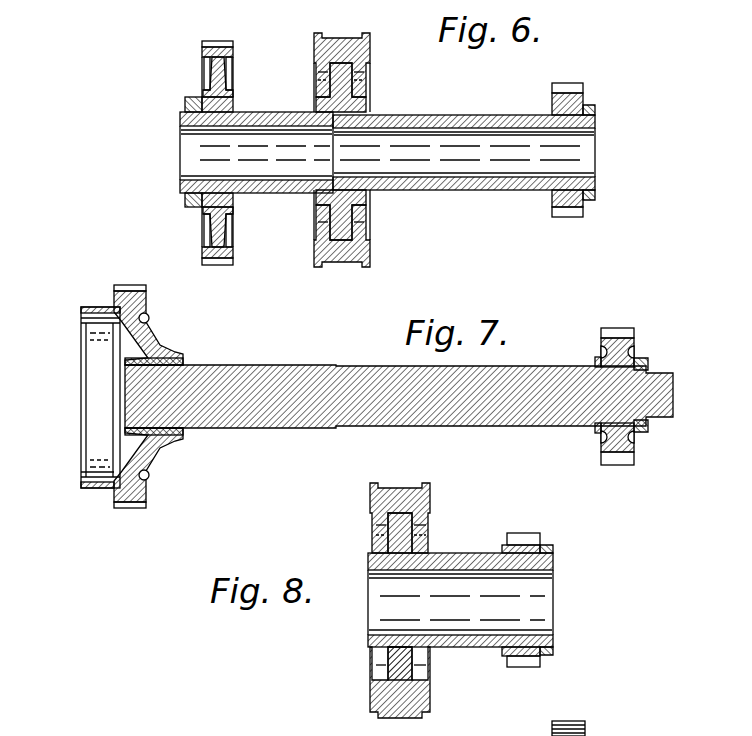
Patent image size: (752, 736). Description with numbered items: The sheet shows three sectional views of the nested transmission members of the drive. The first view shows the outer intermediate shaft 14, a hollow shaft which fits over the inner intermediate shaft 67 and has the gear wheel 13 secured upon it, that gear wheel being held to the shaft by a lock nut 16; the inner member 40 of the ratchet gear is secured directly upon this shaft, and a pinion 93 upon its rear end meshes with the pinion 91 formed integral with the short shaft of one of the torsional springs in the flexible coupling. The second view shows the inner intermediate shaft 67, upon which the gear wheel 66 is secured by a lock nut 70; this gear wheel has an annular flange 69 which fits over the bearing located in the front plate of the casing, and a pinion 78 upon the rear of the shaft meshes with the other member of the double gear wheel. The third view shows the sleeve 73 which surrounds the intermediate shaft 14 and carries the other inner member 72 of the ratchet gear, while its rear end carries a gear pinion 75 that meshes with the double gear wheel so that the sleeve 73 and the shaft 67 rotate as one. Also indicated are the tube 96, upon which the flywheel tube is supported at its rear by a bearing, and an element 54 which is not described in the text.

In FIG. 6, the gear wheel 13 is at (203, 69).
In FIG. 6, the outer intermediate shaft 14 is at (195, 157).
In FIG. 6, the lock nut 16 is at (191, 206).
In FIG. 6, the inner member 40 is at (343, 268).
In FIG. 6, the pinion 93 is at (567, 218).
In FIG. 7, the gear wheel 66 is at (129, 286).
In FIG. 7, the inner intermediate shaft 67 is at (257, 376).
In FIG. 7, the annular flange 69 is at (87, 307).
In FIG. 7, the lock nut 70 is at (126, 431).
In FIG. 7, the pinion 78 is at (617, 328).
In FIG. 8, the inner member 72 is at (398, 484).
In FIG. 8, the sleeve 73 is at (470, 552).
In FIG. 8, the gear pinion 75 is at (524, 533).
In FIG. 8, the pinion 91 is at (569, 722).
In FIG. 8, the tube 96 is at (516, 731).
In FIG. 8, the element 54 is at (693, 730).